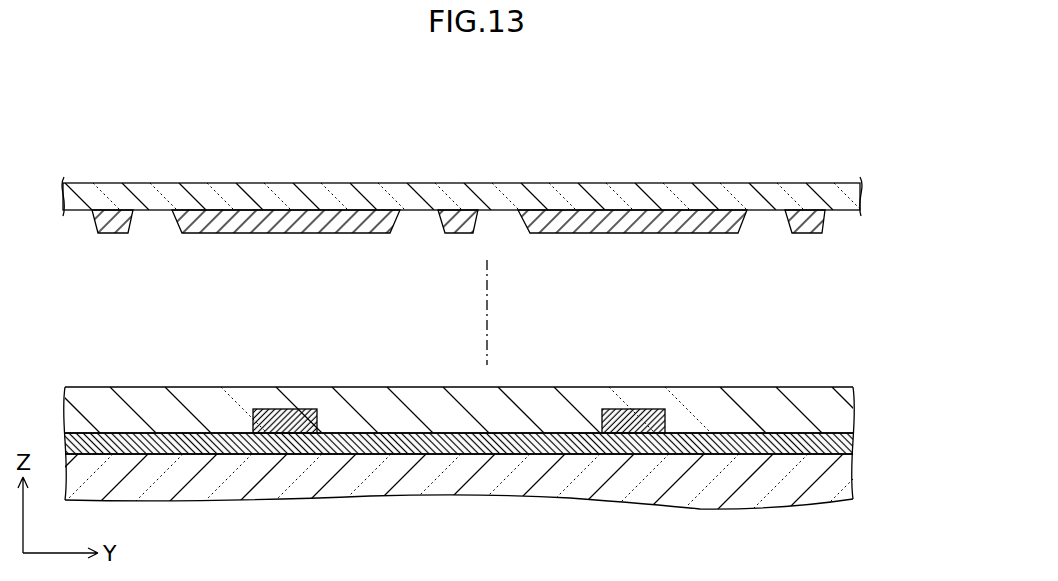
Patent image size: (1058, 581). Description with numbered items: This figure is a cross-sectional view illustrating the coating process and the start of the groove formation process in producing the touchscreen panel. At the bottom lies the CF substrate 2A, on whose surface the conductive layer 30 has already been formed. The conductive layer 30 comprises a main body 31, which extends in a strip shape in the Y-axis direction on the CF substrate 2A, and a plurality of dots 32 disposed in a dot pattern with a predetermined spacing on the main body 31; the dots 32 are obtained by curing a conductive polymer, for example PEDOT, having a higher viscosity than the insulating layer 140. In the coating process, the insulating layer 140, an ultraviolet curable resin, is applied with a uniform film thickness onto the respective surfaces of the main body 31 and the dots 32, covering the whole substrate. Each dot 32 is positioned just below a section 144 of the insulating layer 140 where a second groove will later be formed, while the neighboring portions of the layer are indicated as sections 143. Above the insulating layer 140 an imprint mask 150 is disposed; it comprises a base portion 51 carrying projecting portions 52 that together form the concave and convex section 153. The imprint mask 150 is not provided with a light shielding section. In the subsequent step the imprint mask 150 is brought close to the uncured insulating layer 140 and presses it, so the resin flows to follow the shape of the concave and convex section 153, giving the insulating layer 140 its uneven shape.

The imprint mask 150 is at (494, 167).
The base plate 51 is at (848, 198).
The protrusions 52 is at (822, 222).
The concave and convex section 153 is at (797, 255).
The insulating layer 140 is at (488, 372).
The first portions of bonding layer 143 is at (805, 397).
The section 144 is at (629, 395).
The conductive layer 30 is at (500, 489).
The main body 31 is at (845, 447).
The dots 32 is at (320, 427).
The CF substrate 2A is at (838, 477).